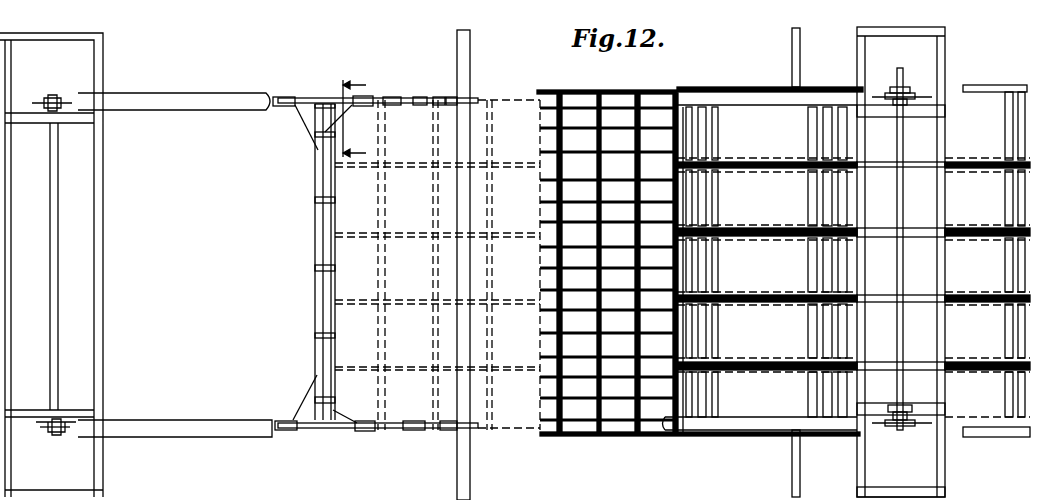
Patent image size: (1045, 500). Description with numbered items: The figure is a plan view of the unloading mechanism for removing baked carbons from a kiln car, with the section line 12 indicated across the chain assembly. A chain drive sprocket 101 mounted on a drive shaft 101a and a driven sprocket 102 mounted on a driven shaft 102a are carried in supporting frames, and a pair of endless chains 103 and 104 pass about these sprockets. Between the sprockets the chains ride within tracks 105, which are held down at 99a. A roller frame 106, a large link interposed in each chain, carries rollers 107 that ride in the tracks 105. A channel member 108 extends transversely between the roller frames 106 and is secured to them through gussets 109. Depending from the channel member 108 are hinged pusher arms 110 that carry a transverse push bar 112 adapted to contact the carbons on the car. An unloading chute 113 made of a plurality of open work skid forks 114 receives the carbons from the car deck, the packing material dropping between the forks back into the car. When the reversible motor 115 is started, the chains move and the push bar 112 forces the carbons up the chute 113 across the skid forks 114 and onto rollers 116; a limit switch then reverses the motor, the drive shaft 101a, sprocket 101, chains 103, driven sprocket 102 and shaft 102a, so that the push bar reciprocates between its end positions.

The section line 12 is at (355, 114).
The hold-down 99a is at (470, 470).
The chain drive sprocket 101 is at (878, 96).
The drive shaft 101a is at (909, 51).
The driven sprocket 102 is at (46, 96).
The driven shaft 102a is at (62, 436).
The endless chain 103 is at (416, 432).
The endless chain 104 is at (414, 97).
The track 105 is at (213, 440).
The roller frame 106 is at (331, 432).
The roller 107 is at (361, 433).
The channel member 108 is at (312, 104).
The gusset 109 is at (300, 122).
The pusher arm 110 is at (316, 150).
The push bar 112 is at (336, 358).
The unloading chute 113 is at (583, 440).
The skid fork 114 is at (568, 432).
The reversible motor 115 is at (925, 46).
The roller 116 is at (712, 420).